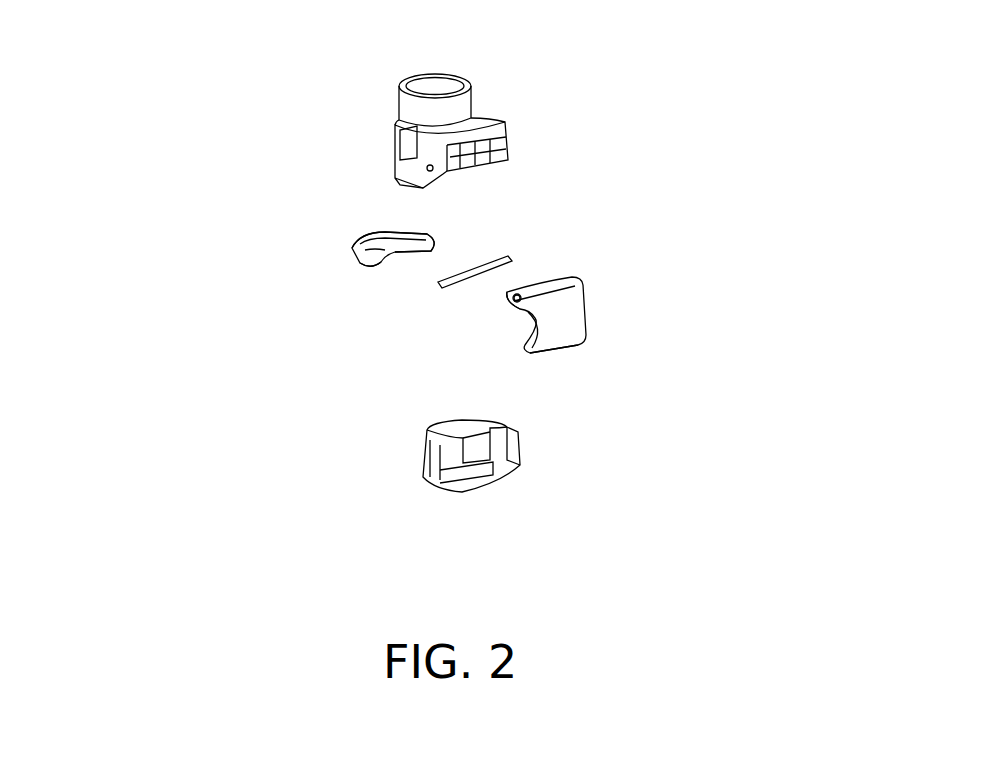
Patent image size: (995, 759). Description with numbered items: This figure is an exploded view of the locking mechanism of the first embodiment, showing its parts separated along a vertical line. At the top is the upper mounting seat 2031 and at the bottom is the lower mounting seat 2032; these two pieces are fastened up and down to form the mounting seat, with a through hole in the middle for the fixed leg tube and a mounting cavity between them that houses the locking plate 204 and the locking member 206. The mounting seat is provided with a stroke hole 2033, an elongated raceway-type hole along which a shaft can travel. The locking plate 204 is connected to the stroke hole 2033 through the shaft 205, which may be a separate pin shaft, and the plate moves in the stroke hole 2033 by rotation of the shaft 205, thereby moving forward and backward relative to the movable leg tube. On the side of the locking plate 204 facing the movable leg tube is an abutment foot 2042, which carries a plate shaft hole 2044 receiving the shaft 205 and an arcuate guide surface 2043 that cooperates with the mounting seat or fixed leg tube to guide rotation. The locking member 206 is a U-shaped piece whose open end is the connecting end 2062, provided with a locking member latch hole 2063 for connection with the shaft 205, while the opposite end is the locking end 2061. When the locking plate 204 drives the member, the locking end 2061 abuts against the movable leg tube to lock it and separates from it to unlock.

The upper mounting seat 2031 is at (472, 112).
The stroke hole 2033 is at (507, 150).
The locking member 206 is at (354, 243).
The locking end 2061 is at (369, 236).
The connecting end 2062 is at (358, 253).
The locking member latch hole 2063 is at (366, 259).
The shaft 205 is at (514, 259).
The locking plate 204 is at (553, 310).
The arcuate guide surface 2043 is at (510, 296).
The abutment foot 2042 is at (508, 310).
The plate shaft hole 2044 is at (563, 347).
The lower mounting seat 2032 is at (533, 473).